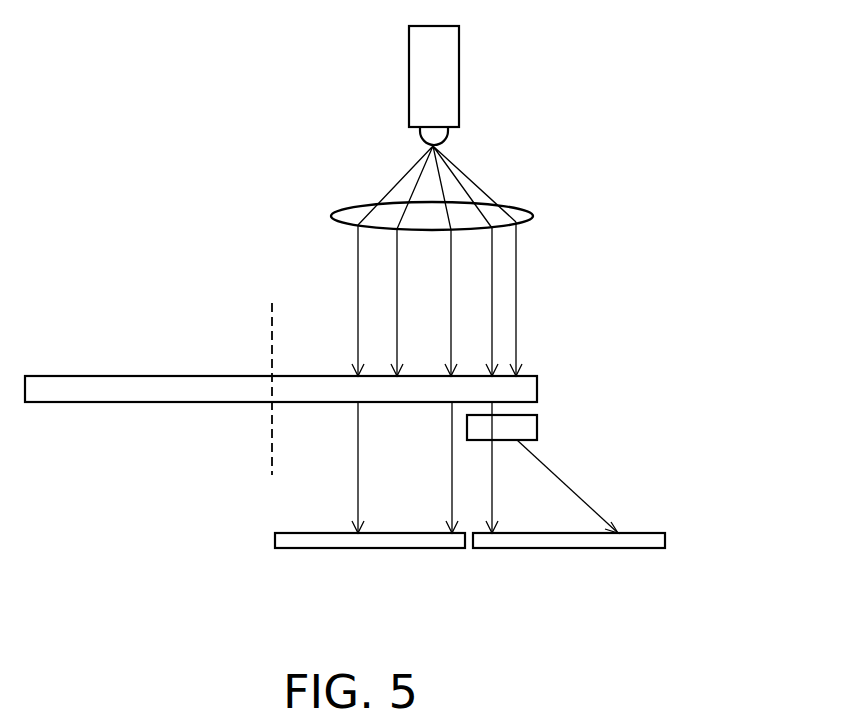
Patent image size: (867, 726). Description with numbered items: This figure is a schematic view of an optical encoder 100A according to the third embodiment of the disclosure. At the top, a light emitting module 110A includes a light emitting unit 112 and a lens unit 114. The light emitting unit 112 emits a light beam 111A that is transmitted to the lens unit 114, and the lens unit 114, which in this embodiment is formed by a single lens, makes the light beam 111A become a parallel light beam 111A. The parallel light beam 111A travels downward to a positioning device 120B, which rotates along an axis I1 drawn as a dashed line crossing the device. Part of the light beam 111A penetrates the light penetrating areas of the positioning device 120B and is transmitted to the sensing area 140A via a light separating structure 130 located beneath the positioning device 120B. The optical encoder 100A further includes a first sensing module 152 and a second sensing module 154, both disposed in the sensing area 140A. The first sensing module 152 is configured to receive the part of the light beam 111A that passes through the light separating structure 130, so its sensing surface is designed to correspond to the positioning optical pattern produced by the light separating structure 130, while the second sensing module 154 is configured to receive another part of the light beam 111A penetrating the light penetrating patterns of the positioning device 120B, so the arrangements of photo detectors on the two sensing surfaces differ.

The optical encoder 100A is at (396, 338).
The light emitting module 110A is at (507, 128).
The light emitting unit 112 is at (445, 92).
The lens unit 114 is at (528, 210).
The light beam 111A is at (517, 297).
The positioning device 120B is at (526, 392).
The axis I1 is at (270, 345).
The light separating structure 130 is at (526, 431).
The sensing area 140A is at (470, 591).
The first sensing module 152 is at (569, 568).
The second sensing module 154 is at (403, 546).